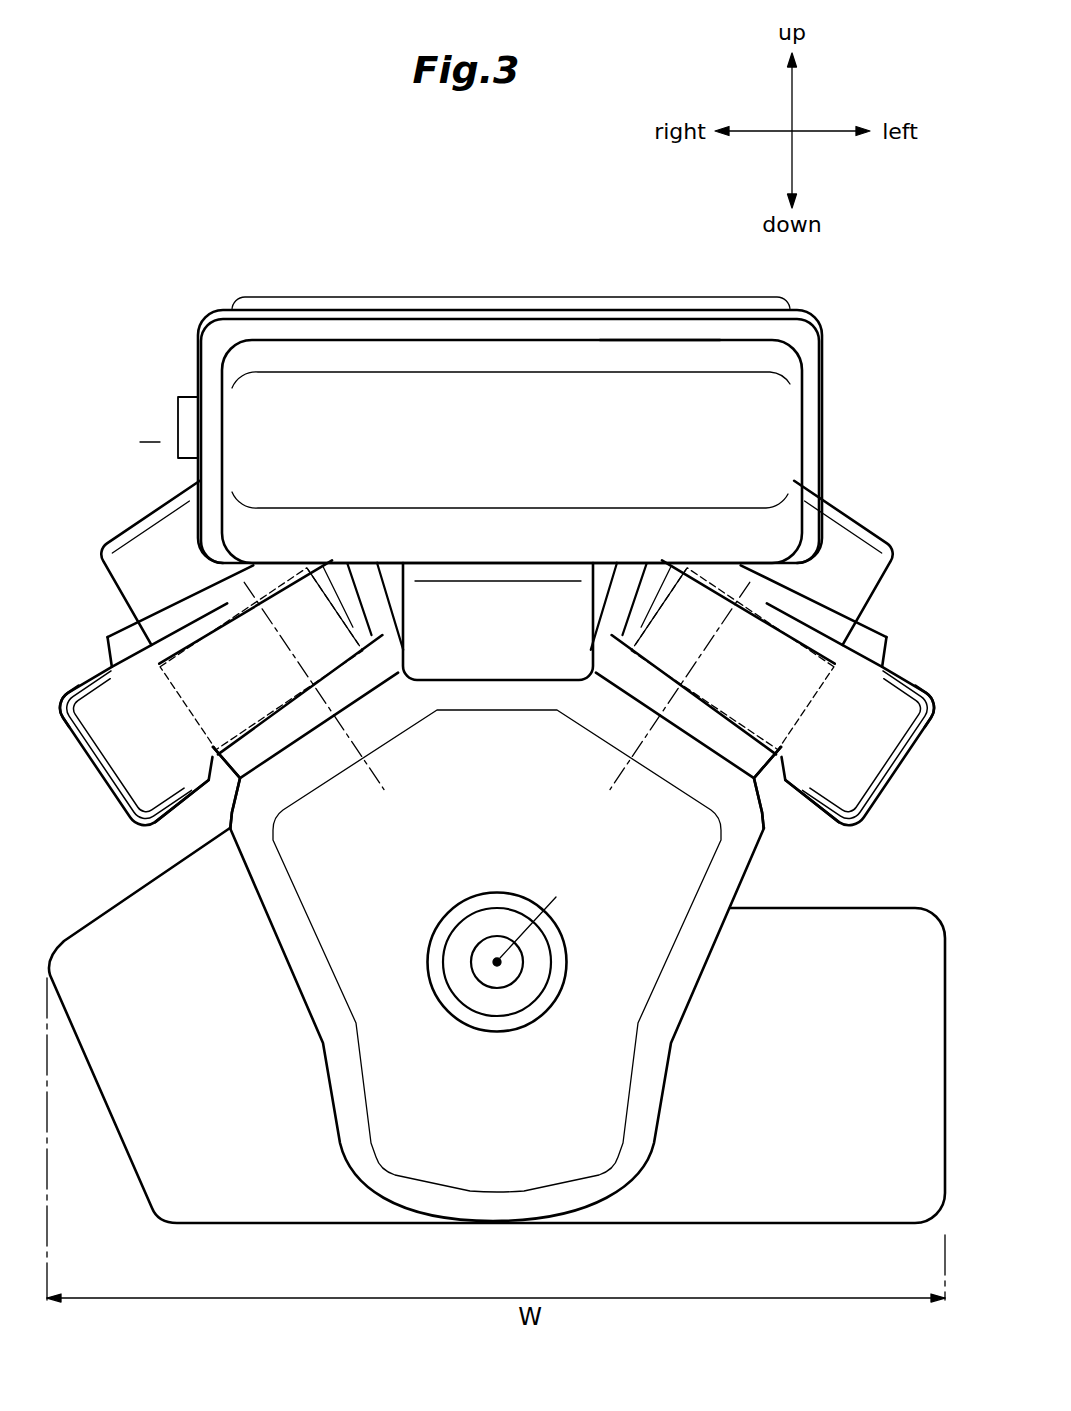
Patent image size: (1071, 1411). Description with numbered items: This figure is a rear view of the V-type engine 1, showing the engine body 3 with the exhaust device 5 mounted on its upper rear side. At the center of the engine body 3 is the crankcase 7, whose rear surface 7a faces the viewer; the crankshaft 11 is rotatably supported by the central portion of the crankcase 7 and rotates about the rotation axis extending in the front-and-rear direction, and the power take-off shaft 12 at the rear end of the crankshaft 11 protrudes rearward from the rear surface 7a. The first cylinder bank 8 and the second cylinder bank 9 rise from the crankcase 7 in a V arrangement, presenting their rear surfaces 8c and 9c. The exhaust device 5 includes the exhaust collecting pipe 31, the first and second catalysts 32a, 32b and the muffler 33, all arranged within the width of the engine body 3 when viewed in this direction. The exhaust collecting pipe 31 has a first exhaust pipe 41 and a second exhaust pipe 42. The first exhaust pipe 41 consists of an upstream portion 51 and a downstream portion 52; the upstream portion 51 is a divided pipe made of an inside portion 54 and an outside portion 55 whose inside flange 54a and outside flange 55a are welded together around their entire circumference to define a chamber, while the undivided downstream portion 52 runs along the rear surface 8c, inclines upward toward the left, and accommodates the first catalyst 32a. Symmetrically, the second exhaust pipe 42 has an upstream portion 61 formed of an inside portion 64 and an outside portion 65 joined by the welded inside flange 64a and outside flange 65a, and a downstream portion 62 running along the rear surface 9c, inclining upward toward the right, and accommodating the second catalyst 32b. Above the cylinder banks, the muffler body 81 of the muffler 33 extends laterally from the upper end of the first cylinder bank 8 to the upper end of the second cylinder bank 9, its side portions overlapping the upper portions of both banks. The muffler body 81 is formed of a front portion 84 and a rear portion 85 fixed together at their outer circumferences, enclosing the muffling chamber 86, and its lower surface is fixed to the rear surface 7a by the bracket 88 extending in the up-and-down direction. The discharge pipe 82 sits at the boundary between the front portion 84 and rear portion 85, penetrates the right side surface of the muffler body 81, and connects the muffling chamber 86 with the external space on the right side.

The engine 1 is at (150, 228).
The engine body 3 is at (305, 1222).
The exhaust device 5 is at (244, 286).
The crankcase 7 is at (438, 1133).
The rear surface of the crankcase 7a is at (607, 1118).
The first cylinder bank 8 is at (112, 527).
The rear surface of the first cylinder bank 8c is at (238, 772).
The second cylinder bank 9 is at (865, 512).
The rear surface of the second cylinder bank 9c is at (727, 743).
The crankshaft 11 is at (490, 985).
The power take-off shaft 12 is at (477, 940).
The exhaust collecting pipe 31 is at (60, 690).
The first catalyst 32a is at (175, 638).
The second catalyst 32b is at (817, 634).
The muffler 33 is at (525, 287).
The first exhaust pipe 41 is at (150, 627).
The second exhaust pipe 42 is at (853, 600).
The upstream portion of the first exhaust pipe 51 is at (90, 663).
The downstream portion of the first exhaust pipe 52 is at (100, 550).
The inside portion 54 is at (167, 833).
The inside flange 54a is at (120, 840).
The outside portion 55 is at (56, 732).
The outside flange 55a is at (100, 812).
The upstream portion of the second exhaust pipe 61 is at (912, 667).
The downstream portion of the second exhaust pipe 62 is at (862, 532).
The inside portion 64 is at (813, 783).
The inside flange 64a is at (862, 820).
The outside portion 65 is at (940, 720).
The outside flange 65a is at (887, 810).
The muffler body 81 is at (578, 297).
The discharge pipe 82 is at (168, 396).
The front portion 84 is at (403, 297).
The rear portion 85 is at (782, 408).
The muffling chamber 86 is at (662, 358).
The bracket 88 is at (493, 660).